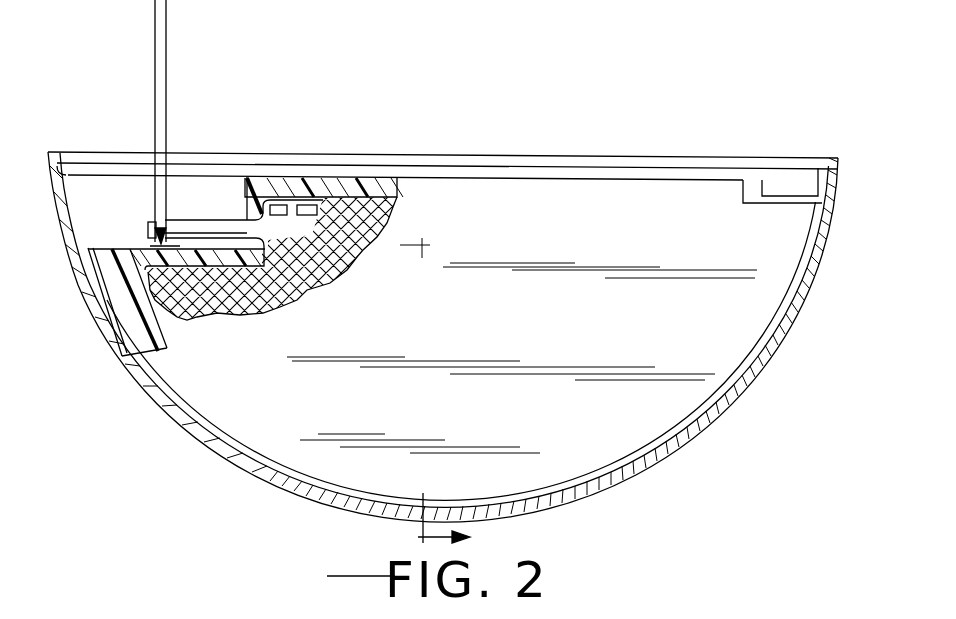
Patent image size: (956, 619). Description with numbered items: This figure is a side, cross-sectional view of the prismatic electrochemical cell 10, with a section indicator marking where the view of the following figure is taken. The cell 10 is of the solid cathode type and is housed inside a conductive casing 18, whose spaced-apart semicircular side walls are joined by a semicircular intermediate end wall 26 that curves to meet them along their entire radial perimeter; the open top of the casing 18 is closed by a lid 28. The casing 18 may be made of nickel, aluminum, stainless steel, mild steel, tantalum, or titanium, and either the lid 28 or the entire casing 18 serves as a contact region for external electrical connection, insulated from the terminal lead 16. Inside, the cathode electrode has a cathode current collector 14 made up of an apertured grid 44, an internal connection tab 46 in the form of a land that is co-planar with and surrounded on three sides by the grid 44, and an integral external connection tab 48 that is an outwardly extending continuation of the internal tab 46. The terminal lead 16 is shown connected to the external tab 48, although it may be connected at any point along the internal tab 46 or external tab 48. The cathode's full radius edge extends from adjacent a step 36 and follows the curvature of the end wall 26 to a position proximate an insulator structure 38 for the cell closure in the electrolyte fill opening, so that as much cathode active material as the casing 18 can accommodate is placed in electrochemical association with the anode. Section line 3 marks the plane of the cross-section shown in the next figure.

The electrochemical cell 10 is at (634, 116).
The cathode current collector 14 is at (157, 323).
The terminal lead 16 is at (170, 47).
The conductive casing 18 is at (832, 291).
The intermediate end wall 26 is at (717, 417).
The lid 28 is at (455, 152).
The step 36 is at (122, 243).
The insulator structure 38 is at (797, 185).
The apertured grid 44 is at (367, 205).
The internal connection tab 46 is at (292, 228).
The external connection tab 48 is at (178, 176).
The section line 3 is at (458, 524).